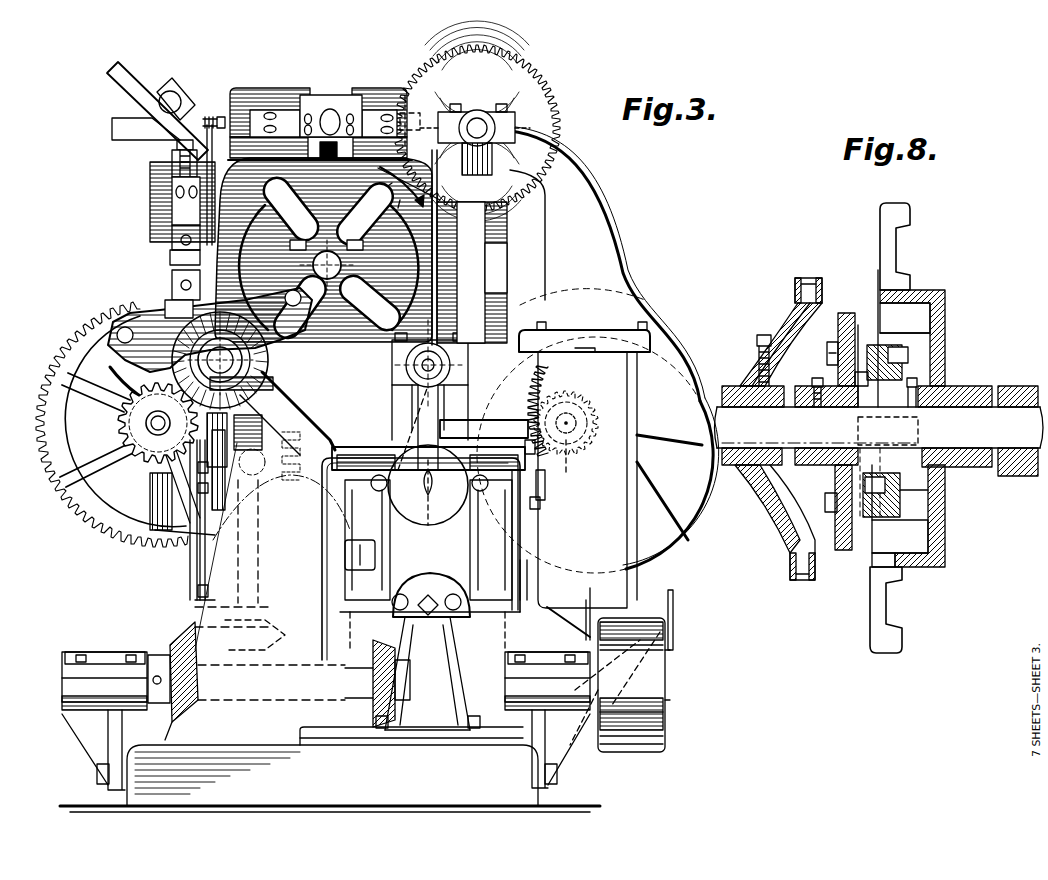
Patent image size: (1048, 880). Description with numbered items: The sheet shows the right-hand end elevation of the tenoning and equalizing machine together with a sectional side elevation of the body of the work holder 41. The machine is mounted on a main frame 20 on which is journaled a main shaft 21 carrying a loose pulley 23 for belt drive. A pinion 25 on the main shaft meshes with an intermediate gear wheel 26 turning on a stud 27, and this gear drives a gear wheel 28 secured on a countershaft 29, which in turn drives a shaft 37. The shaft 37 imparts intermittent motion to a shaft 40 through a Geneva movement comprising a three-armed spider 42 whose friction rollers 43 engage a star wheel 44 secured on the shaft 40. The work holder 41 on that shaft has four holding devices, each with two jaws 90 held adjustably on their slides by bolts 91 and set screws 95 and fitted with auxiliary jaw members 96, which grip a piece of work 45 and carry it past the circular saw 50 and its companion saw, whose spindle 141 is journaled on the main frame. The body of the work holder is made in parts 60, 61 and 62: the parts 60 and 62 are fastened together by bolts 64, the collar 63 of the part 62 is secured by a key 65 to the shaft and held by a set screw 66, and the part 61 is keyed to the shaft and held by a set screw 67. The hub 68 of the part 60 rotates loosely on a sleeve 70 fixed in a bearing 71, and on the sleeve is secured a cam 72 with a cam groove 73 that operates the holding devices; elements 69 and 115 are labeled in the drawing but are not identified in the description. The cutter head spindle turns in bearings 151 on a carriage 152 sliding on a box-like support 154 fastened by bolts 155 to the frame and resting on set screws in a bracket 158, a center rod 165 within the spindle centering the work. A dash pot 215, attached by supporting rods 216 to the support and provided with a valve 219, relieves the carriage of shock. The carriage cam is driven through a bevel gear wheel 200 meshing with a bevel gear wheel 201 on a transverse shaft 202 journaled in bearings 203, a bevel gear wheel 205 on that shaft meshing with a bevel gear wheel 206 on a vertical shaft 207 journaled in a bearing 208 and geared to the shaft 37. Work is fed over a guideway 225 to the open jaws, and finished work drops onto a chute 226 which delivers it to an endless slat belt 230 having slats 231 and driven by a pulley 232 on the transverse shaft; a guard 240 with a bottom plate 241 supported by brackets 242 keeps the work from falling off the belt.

In FIG. 3, the main frame 20 is at (330, 778).
In FIG. 3, the main shaft 21 is at (584, 465).
In FIG. 3, the loose pulley 23 is at (703, 350).
In FIG. 3, the pinion 25 is at (575, 405).
In FIG. 3, the intermediate gear wheel 26 is at (535, 385).
In FIG. 3, the stud 27 is at (375, 440).
In FIG. 3, the gear wheel 28 is at (95, 338).
In FIG. 3, the countershaft 29 is at (130, 423).
In FIG. 3, the shaft 37 is at (222, 330).
In FIG. 3, the shaft 40 is at (340, 246).
In FIG. 8, the shaft 40 is at (1015, 476).
In FIG. 3, the work holder 41 is at (398, 95).
In FIG. 8, the work holder 41 is at (866, 610).
In FIG. 3, the three-armed spider 42 is at (165, 305).
In FIG. 3, the friction rollers 43 is at (118, 318).
In FIG. 3, the star wheel 44 is at (400, 274).
In FIG. 3, the work 45 is at (458, 262).
In FIG. 3, the circular saw 50 is at (560, 55).
In FIG. 3, the body part 60 is at (320, 114).
In FIG. 8, the body part 60 is at (880, 220).
In FIG. 8, the body part 61 is at (795, 290).
In FIG. 8, the body part 62 is at (846, 313).
In FIG. 8, the collar 63 is at (820, 478).
In FIG. 8, the bolts 64 is at (800, 345).
In FIG. 8, the key 65 is at (858, 427).
In FIG. 8, the set screw 66 is at (814, 380).
In FIG. 8, the set screw 67 is at (757, 342).
In FIG. 8, the hub 68 is at (975, 380).
In FIG. 8, the nut 69 is at (827, 352).
In FIG. 8, the sleeve 70 is at (968, 467).
In FIG. 8, the bearing 71 is at (1018, 386).
In FIG. 8, the cam 72 is at (945, 358).
In FIG. 8, the cam groove 73 is at (904, 516).
In FIG. 3, the jaw 90 is at (488, 292).
In FIG. 3, the bolt 91 is at (150, 190).
In FIG. 3, the set screw 95 is at (177, 152).
In FIG. 3, the auxiliary jaw member 96 is at (485, 270).
In FIG. 3, the block 115 is at (170, 255).
In FIG. 3, the spindle 141 is at (505, 133).
In FIG. 3, the bearings 151 is at (405, 345).
In FIG. 3, the carriage 152 is at (484, 427).
In FIG. 3, the box-like support 154 is at (530, 540).
In FIG. 3, the bolts 155 is at (548, 592).
In FIG. 3, the bracket 158 is at (455, 735).
In FIG. 3, the center rod 165 is at (428, 340).
In FIG. 3, the bevel gear wheel 200 is at (460, 655).
In FIG. 3, the bevel gear wheel 201 is at (395, 668).
In FIG. 3, the transverse shaft 202 is at (345, 690).
In FIG. 3, the bearings 203 is at (540, 668).
In FIG. 3, the bevel gear wheel 205 is at (178, 645).
In FIG. 3, the bevel gear wheel 206 is at (262, 640).
In FIG. 3, the vertical shaft 207 is at (190, 576).
In FIG. 3, the bearing 208 is at (185, 512).
In FIG. 3, the dash pot 215 is at (468, 450).
In FIG. 3, the supporting rods 216 is at (372, 570).
In FIG. 3, the valve 219 is at (428, 485).
In FIG. 3, the guideway 225 is at (120, 90).
In FIG. 3, the chute 226 is at (592, 615).
In FIG. 3, the endless slat belt 230 is at (585, 733).
In FIG. 3, the slats 231 is at (628, 740).
In FIG. 3, the pulley 232 is at (680, 676).
In FIG. 3, the guard 240 is at (691, 620).
In FIG. 3, the bottom plate 241 is at (617, 668).
In FIG. 3, the brackets 242 is at (665, 712).